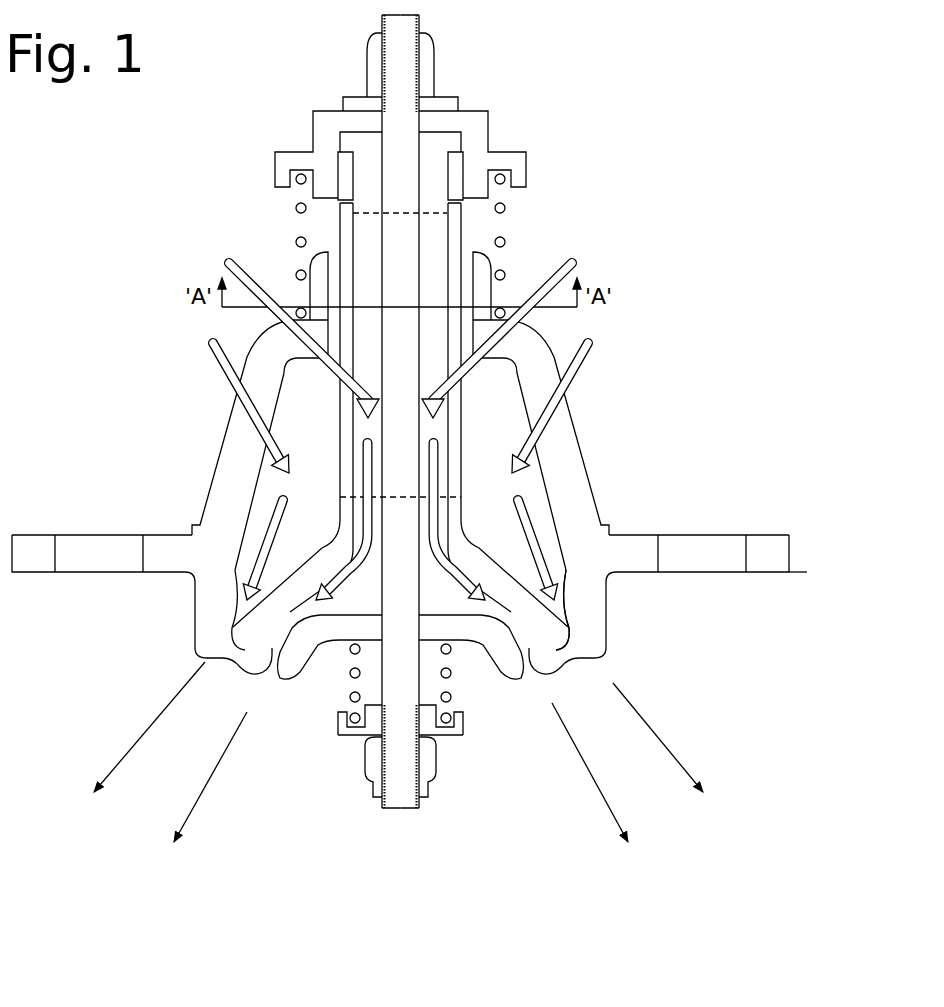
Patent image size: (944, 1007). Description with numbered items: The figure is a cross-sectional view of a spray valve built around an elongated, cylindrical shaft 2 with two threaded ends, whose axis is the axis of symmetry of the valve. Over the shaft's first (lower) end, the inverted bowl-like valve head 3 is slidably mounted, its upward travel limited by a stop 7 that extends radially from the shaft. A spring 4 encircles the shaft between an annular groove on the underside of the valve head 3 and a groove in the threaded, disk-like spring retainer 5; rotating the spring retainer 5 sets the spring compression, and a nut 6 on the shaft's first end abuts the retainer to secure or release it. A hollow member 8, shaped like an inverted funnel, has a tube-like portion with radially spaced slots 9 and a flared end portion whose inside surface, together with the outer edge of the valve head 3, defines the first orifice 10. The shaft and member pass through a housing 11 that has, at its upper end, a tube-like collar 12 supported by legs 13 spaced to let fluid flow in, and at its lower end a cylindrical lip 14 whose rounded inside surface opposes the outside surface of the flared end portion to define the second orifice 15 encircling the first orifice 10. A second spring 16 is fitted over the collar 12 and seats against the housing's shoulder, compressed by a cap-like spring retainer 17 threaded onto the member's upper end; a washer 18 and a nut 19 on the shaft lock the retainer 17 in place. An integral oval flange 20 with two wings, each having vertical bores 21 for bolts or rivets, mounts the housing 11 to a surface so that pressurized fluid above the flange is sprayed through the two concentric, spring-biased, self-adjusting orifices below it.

The shaft 2 is at (402, 815).
The valve head 3 is at (502, 677).
The spring 4 is at (346, 678).
The spring retainer 5 is at (456, 741).
The nut 6 is at (446, 775).
The stop 7 is at (426, 607).
The hollow member 8 is at (573, 671).
The slots 9 is at (346, 412).
The first orifice 10 is at (265, 678).
The housing 11 is at (582, 444).
The collar 12 is at (499, 294).
The legs 13 is at (258, 433).
The lip 14 is at (614, 649).
The second orifice 15 is at (202, 661).
The spring 16 is at (509, 240).
The spring retainer 17 is at (495, 140).
The washer 18 is at (461, 103).
The nut 19 is at (437, 72).
The flange 20 is at (779, 533).
The bores 21 is at (78, 533).